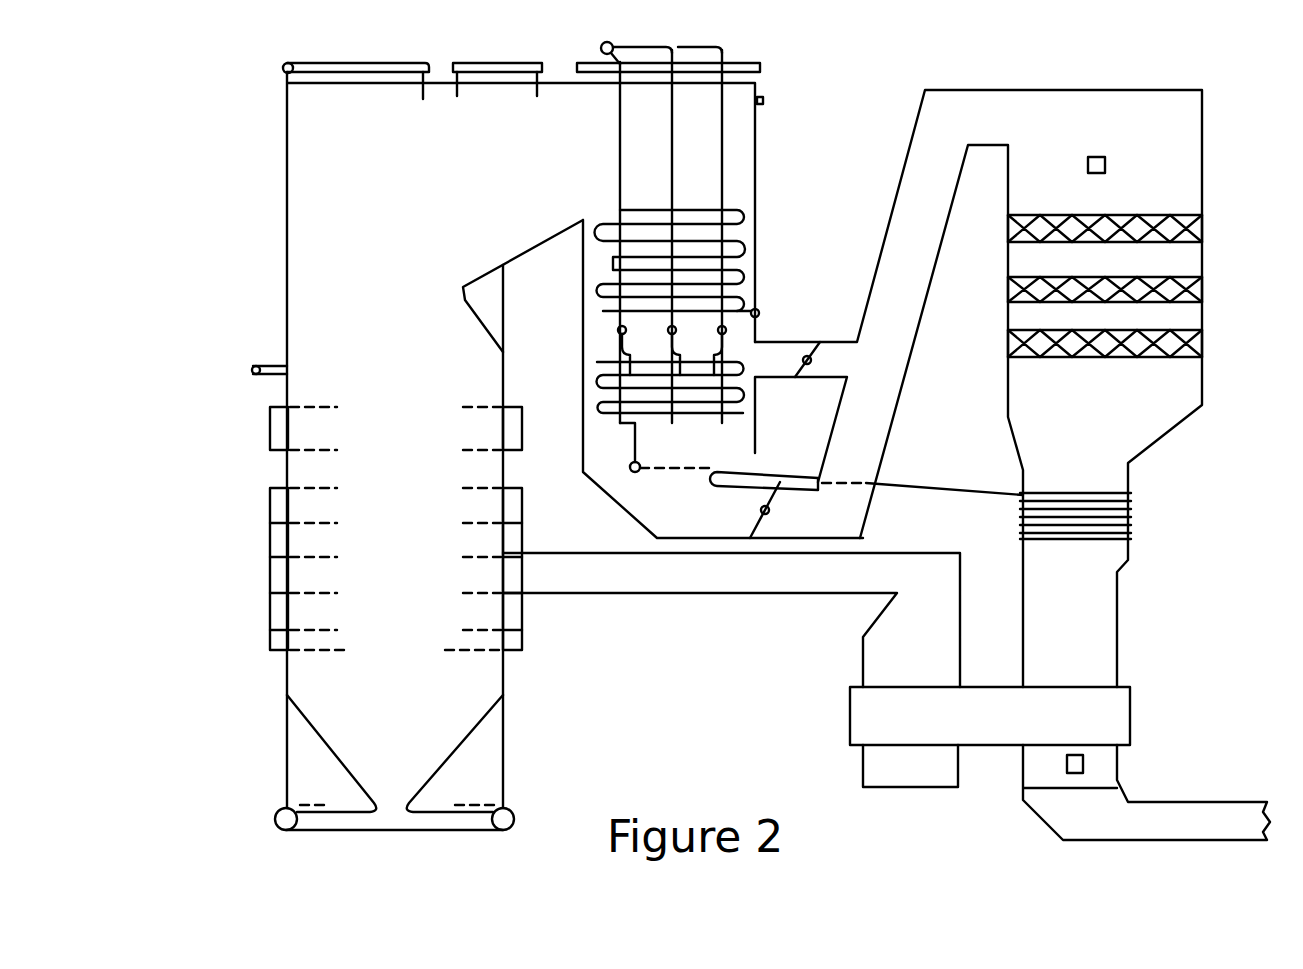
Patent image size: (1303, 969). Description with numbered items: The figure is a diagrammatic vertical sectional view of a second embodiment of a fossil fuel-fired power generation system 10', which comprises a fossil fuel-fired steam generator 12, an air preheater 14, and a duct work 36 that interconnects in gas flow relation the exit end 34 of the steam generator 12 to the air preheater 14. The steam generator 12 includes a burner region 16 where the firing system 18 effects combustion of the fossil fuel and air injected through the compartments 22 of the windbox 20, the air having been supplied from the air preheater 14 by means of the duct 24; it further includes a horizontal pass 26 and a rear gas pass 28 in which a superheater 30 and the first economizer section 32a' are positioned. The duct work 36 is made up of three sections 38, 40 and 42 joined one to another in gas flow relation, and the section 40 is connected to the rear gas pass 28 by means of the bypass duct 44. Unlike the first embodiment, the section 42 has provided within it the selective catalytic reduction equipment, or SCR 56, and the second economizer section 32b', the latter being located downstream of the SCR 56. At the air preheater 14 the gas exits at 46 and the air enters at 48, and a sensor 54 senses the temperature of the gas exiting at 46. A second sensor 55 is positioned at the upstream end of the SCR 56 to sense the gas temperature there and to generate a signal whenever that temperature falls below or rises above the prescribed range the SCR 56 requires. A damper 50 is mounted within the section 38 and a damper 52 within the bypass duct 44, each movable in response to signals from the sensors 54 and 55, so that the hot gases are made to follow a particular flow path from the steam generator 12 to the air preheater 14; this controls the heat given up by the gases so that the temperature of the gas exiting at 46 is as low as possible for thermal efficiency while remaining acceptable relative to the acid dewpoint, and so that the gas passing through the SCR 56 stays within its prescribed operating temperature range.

The fossil fuel-fired power generation system 10' is at (765, 445).
The fossil fuel-fired steam generator 12 is at (283, 178).
The air preheater 14 is at (1133, 728).
The burner region 16 is at (406, 600).
The firing system 18 is at (265, 455).
The windbox 20 is at (526, 597).
The compartments 22 is at (270, 430).
The duct 24 is at (792, 600).
The horizontal pass 26 is at (526, 253).
The rear gas pass 28 is at (580, 320).
The superheater 30 is at (748, 252).
The first economizer section 32a' is at (626, 417).
The second economizer section 32b' is at (1141, 516).
The exit end 34 is at (733, 469).
The duct work 36 is at (948, 256).
The section 38 is at (712, 539).
The section 40 is at (897, 415).
The section 42 is at (1006, 418).
The bypass duct 44 is at (783, 342).
The gas exit 46 is at (1120, 772).
The air entry 48 is at (860, 770).
The damper 50 is at (770, 511).
The damper 52 is at (812, 358).
The sensor 54 is at (1067, 772).
The sensor 55 is at (1096, 155).
The selective catalytic reduction equipment (SCR) 56 is at (1080, 211).